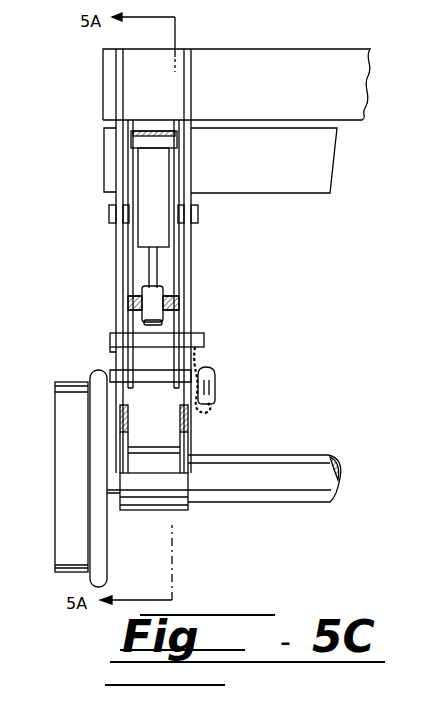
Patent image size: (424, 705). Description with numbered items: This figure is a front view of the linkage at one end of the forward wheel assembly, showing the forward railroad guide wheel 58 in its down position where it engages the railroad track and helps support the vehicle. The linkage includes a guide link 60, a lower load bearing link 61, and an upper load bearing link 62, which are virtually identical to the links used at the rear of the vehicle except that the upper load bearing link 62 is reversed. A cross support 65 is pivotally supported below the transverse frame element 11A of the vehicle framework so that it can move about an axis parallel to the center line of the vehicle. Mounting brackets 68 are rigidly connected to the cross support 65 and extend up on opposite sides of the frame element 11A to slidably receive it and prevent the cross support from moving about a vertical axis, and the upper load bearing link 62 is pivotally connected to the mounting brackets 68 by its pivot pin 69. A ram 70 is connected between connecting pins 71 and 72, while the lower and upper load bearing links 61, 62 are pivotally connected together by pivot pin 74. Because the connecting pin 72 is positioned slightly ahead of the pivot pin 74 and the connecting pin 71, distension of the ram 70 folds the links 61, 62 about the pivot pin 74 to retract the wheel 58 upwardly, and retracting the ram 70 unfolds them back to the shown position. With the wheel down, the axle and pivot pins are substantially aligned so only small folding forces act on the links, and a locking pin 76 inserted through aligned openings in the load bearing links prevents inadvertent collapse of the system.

The transverse frame element 11A is at (265, 60).
The forward railroad guide wheel 58 is at (55, 460).
The guide link 60 is at (120, 435).
The lower load bearing link 61 is at (128, 398).
The upper load bearing link 62 is at (116, 265).
The cross support 65 is at (275, 196).
The mounting brackets 68 is at (112, 140).
The pivot pin 69 is at (107, 218).
The ram 70 is at (155, 208).
The connecting pin 71 is at (128, 144).
The connecting pin 72 is at (140, 306).
The pivot pin 74 is at (195, 334).
The locking pin 76 is at (215, 378).